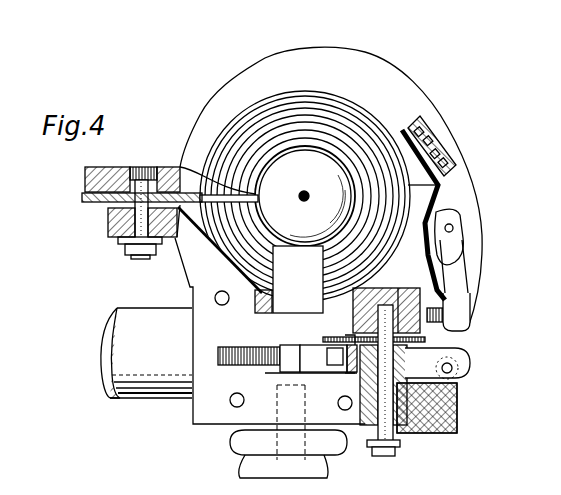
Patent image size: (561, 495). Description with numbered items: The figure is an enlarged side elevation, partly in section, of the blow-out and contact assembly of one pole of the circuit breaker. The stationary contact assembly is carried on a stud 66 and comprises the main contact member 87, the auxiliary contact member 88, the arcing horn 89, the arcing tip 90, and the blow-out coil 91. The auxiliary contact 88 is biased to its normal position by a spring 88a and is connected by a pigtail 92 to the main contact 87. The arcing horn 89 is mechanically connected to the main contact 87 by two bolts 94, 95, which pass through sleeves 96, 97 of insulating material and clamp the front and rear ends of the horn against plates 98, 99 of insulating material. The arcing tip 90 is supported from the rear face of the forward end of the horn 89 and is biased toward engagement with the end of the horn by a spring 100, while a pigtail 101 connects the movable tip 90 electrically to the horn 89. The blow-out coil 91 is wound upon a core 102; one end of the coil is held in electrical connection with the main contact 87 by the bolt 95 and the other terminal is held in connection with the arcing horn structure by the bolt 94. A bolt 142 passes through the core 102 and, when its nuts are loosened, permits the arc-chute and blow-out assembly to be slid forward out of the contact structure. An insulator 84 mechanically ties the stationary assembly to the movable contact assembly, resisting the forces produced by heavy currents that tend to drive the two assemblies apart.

The stud 66 is at (118, 320).
The insulator 84 is at (240, 466).
The main contact member 87 is at (200, 424).
The auxiliary contact member 88 is at (462, 375).
The spring 88a is at (218, 352).
The arcing horn 89 is at (390, 95).
The arcing tip 90 is at (462, 305).
The blow-out coil 91 is at (255, 130).
The pigtail 92 is at (350, 372).
The bolt 94 is at (390, 456).
The bolt 95 is at (150, 166).
The sleeve of insulating material 96 is at (108, 232).
The sleeve of insulating material 97 is at (385, 435).
The plate of insulating material 98 is at (468, 358).
The plate of insulating material 99 is at (95, 206).
The spring 100 is at (440, 330).
The pigtail 101 is at (452, 200).
The core 102 is at (305, 196).
The bolt 142 is at (304, 201).